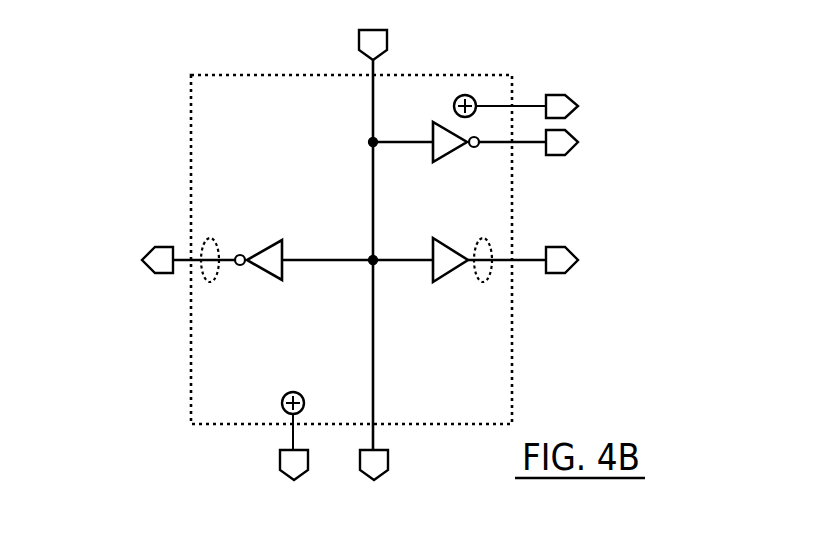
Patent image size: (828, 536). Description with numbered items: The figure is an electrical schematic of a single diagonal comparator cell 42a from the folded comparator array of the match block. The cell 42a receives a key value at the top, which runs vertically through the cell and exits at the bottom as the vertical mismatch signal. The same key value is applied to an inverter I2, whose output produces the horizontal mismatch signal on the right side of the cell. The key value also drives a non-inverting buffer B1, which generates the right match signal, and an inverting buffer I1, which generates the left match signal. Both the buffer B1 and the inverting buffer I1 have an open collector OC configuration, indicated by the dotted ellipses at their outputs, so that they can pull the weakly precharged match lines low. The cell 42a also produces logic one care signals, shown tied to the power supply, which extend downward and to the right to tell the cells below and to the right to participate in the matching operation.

The diagonal comparator cell 42a is at (512, 362).
The inverting buffer I1 is at (262, 243).
The inverter I2 is at (453, 154).
The non-inverting buffer B1 is at (458, 268).
The open collector configuration OC is at (210, 282).